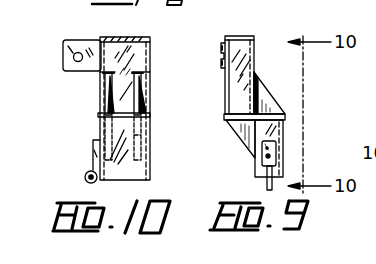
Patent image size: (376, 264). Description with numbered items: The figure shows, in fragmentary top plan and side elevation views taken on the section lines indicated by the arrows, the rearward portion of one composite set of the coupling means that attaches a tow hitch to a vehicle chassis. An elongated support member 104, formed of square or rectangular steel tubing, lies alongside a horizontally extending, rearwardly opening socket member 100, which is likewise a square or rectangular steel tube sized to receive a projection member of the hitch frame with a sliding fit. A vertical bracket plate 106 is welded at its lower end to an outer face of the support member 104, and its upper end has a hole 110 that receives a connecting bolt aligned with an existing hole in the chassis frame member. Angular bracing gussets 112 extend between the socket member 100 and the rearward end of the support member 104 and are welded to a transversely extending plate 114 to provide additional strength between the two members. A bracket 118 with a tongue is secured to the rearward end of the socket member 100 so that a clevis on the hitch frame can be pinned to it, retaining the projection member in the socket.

In FIG. 10, the socket member 100 is at (151, 164).
In FIG. 9, the socket member 100 is at (285, 142).
In FIG. 10, the elongated support member 104 is at (100, 89).
In FIG. 9, the elongated support member 104 is at (250, 63).
In FIG. 10, the vertical bracket plate 106 is at (69, 52).
In FIG. 9, the vertical bracket plate 106 is at (222, 62).
In FIG. 9, the hole 110 is at (221, 45).
In FIG. 10, the bracing gusset 112 is at (108, 104).
In FIG. 9, the bracing gusset 112 is at (268, 96).
In FIG. 10, the transversely extending plate 114 is at (148, 116).
In FIG. 9, the transversely extending plate 114 is at (287, 117).
In FIG. 10, the bracket 118 is at (85, 178).
In FIG. 9, the bracket 118 is at (265, 181).